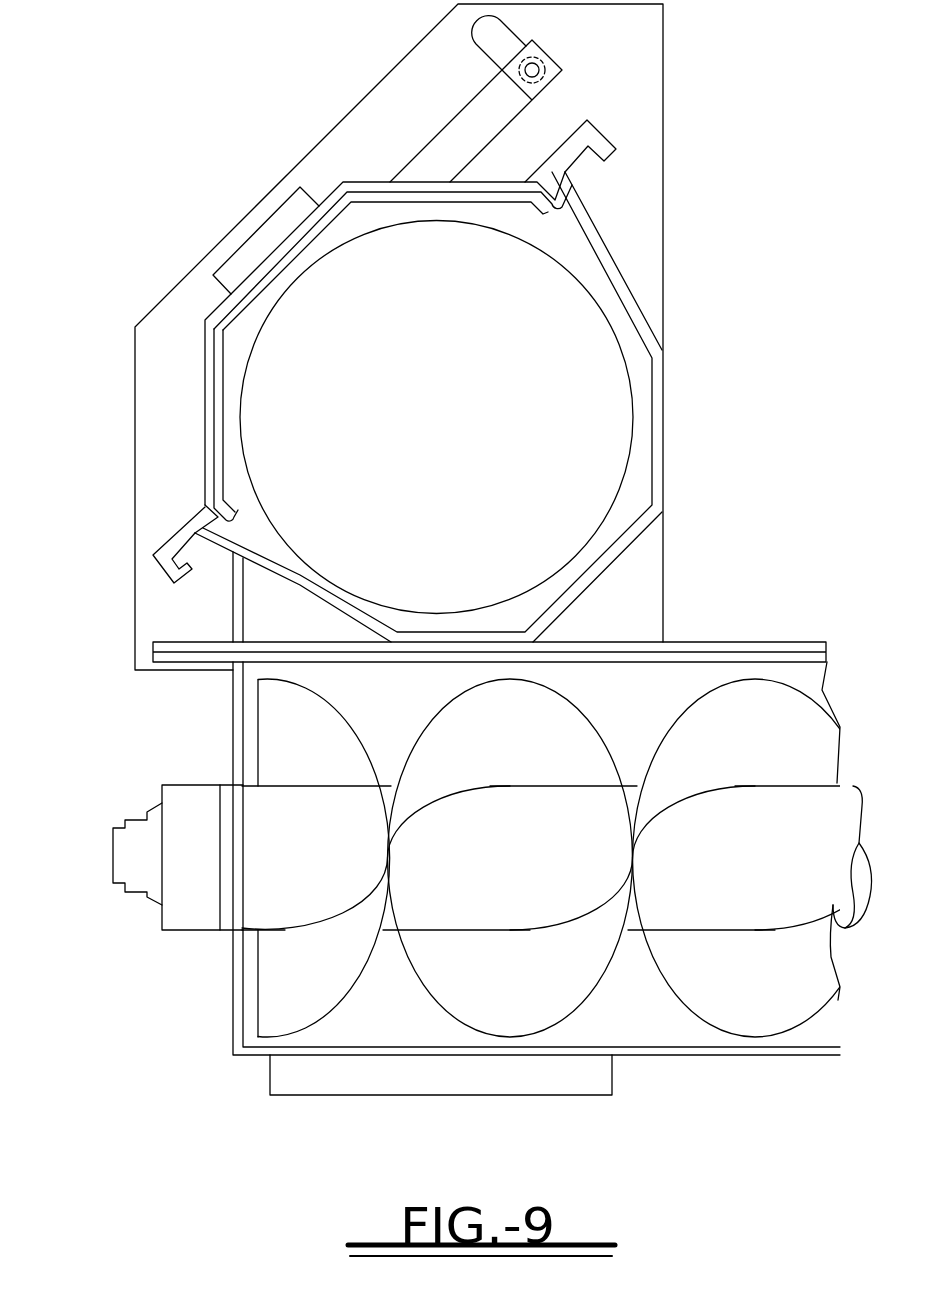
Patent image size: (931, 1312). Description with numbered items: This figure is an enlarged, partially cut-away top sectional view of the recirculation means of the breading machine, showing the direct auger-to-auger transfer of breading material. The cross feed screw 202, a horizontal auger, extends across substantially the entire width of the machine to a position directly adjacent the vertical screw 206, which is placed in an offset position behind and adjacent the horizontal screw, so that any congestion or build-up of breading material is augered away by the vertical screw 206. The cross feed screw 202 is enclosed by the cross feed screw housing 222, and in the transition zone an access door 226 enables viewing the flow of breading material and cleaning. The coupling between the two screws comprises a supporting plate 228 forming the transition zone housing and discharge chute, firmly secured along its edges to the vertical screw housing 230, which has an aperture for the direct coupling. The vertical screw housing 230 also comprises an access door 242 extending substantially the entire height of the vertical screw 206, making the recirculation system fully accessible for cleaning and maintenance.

The cross feed screw 202 is at (272, 893).
The vertical screw 206 is at (560, 385).
The cross feed screw housing 222 is at (255, 1065).
The access door 226 is at (405, 1096).
The supporting plate 228 is at (265, 656).
The vertical screw housing 230 is at (632, 542).
The access door 242 is at (205, 433).